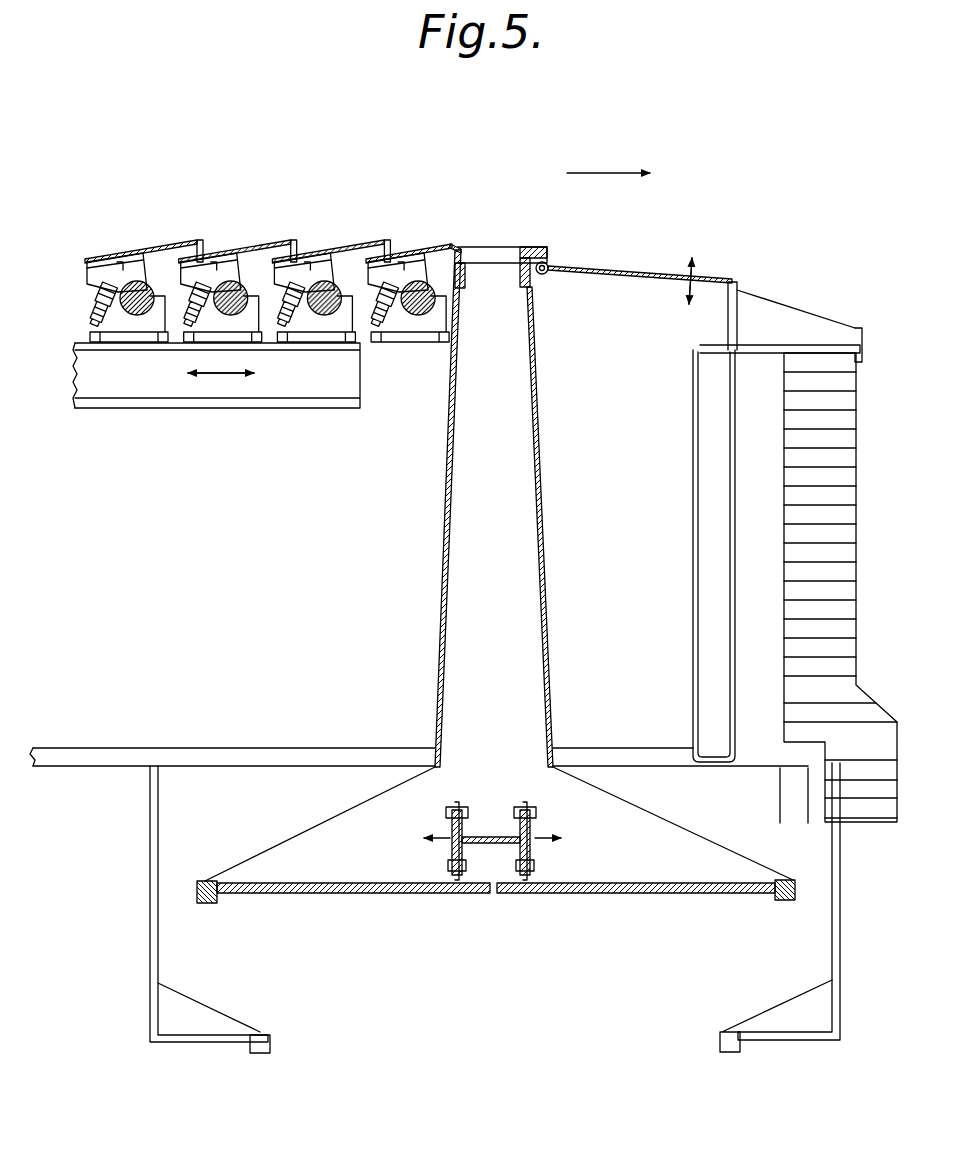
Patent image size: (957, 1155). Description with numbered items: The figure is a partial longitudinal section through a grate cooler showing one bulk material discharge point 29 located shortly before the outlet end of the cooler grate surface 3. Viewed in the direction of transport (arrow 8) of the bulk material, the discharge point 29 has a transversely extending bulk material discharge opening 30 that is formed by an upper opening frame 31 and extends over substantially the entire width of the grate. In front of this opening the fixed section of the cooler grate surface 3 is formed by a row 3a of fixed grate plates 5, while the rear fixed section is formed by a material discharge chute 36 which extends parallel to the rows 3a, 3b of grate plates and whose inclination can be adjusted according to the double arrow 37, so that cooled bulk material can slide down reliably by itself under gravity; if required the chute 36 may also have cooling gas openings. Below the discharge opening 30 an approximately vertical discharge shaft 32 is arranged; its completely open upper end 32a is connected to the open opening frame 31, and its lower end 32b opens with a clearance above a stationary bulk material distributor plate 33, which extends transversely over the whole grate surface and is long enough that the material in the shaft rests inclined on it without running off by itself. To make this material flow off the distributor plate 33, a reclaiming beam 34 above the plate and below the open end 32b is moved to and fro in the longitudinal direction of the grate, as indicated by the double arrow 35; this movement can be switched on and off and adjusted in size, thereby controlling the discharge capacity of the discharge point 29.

The cooler grate surface 3 is at (172, 240).
The row of fixed grate plates 3a is at (237, 245).
The row of grate plates 3b is at (330, 247).
The fixed grate plates 5 is at (437, 244).
The direction of transport 8 is at (602, 173).
The bulk material discharge point 29 is at (493, 238).
The bulk material discharge opening 30 is at (467, 244).
The opening frame 31 is at (529, 246).
The discharge shaft 32 is at (545, 536).
The upper end of discharge shaft 32a is at (532, 287).
The lower end of discharge shaft 32b is at (567, 748).
The bulk material distributor plate 33 is at (673, 891).
The reclaiming beam 34 is at (455, 845).
The double arrow 35 is at (540, 832).
The material discharge chute 36 is at (608, 268).
The double arrow 37 is at (692, 272).